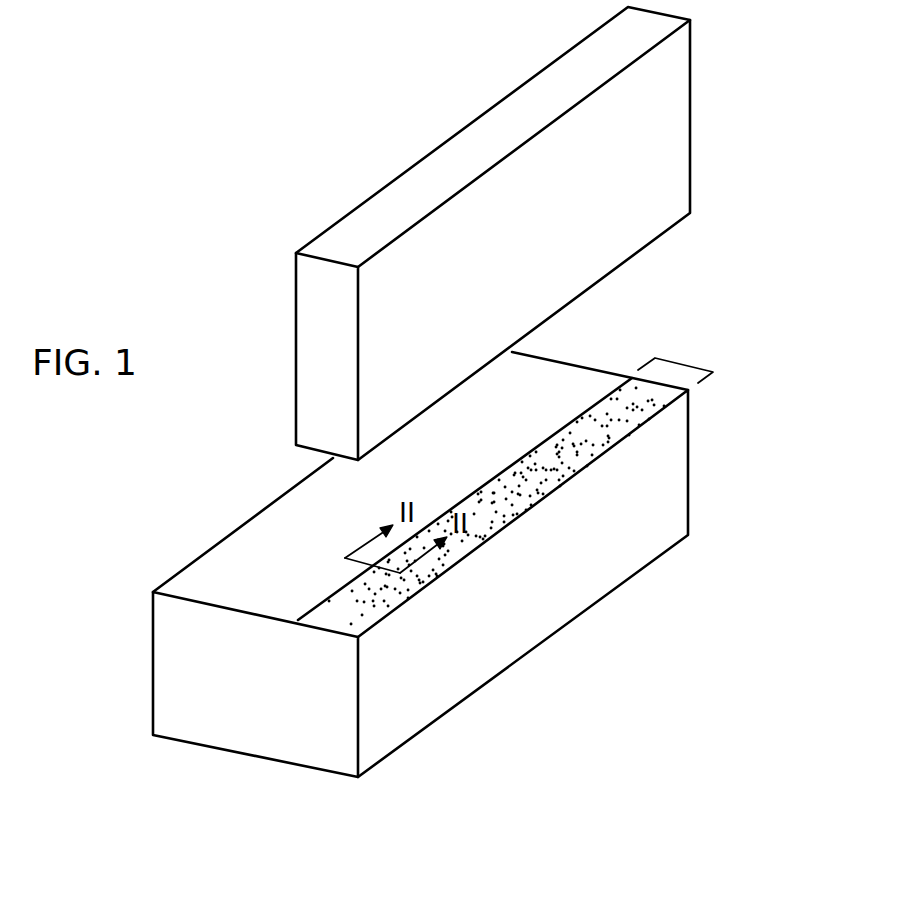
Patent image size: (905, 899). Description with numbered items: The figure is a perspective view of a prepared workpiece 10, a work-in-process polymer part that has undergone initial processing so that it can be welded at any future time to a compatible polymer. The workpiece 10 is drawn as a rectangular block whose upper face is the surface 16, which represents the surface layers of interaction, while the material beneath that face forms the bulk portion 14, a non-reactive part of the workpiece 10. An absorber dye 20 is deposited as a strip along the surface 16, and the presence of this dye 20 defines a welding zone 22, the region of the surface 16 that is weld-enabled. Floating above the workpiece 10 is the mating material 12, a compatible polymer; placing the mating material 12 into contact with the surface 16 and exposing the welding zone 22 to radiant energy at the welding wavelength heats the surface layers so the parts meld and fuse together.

The prepared workpiece 10 is at (505, 694).
The mating material 12 is at (700, 80).
The bulk portion 14 is at (600, 535).
The surface 16 is at (272, 553).
The absorber dye 20 is at (613, 424).
The welding zone 22 is at (687, 362).